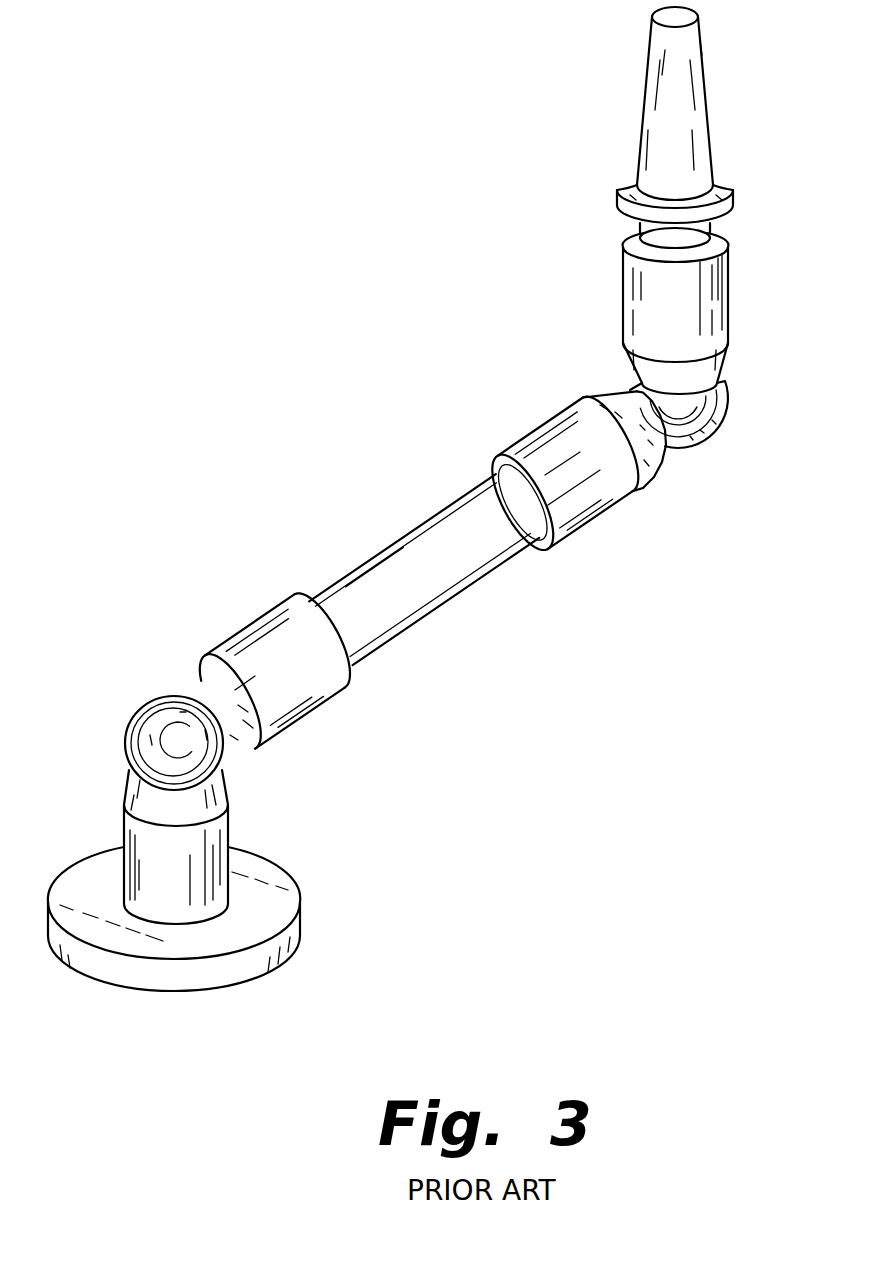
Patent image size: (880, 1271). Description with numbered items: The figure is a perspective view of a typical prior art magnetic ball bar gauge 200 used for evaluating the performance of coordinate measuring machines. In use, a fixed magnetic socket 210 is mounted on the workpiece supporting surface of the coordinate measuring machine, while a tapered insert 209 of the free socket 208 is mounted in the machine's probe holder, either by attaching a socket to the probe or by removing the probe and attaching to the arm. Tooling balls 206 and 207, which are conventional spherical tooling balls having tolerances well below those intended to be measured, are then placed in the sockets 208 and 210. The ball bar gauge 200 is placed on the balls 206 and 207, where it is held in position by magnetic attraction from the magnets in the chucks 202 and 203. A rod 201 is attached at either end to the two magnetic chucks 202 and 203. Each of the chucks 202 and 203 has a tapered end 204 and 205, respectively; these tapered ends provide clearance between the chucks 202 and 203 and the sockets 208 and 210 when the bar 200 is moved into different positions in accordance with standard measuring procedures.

The magnetic ball bar gauge 200 is at (505, 650).
The rod 201 is at (387, 550).
The magnetic chuck 202 is at (248, 623).
The magnetic chuck 203 is at (510, 440).
The tapered end 204 is at (190, 677).
The tapered end 205 is at (600, 393).
The tooling ball 206 is at (127, 735).
The tooling ball 207 is at (722, 427).
The free socket 208 is at (625, 298).
The tapered insert 209 is at (708, 88).
The fixed magnetic socket 210 is at (293, 955).